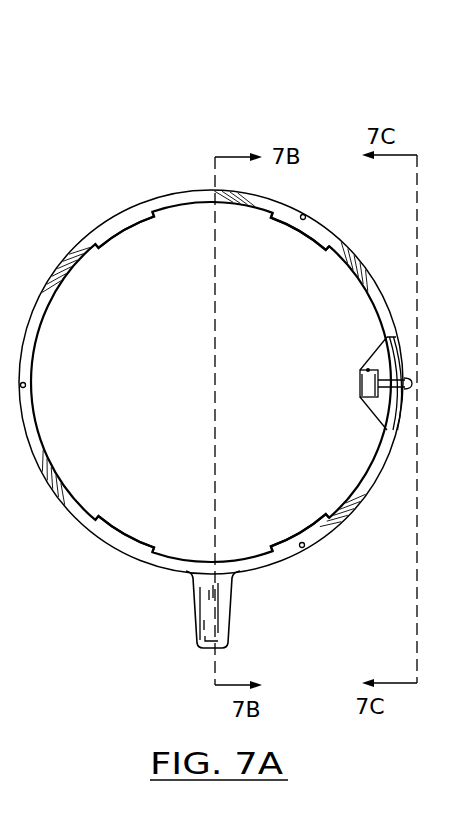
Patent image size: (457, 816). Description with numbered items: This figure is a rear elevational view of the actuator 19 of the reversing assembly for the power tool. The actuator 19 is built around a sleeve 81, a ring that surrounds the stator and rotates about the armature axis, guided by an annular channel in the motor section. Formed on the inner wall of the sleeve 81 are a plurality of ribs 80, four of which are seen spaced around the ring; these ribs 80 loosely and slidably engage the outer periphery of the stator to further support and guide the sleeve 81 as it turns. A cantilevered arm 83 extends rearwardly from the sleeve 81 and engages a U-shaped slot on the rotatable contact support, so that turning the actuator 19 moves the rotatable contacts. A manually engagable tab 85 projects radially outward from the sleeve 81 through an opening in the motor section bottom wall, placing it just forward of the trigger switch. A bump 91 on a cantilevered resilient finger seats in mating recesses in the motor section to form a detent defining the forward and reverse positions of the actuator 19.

The actuator 19 is at (215, 130).
The ribs 80 is at (125, 233).
The sleeve 81 is at (327, 232).
The cantilevered arm 83 is at (380, 361).
The tab 85 is at (222, 611).
The bump 91 is at (410, 388).